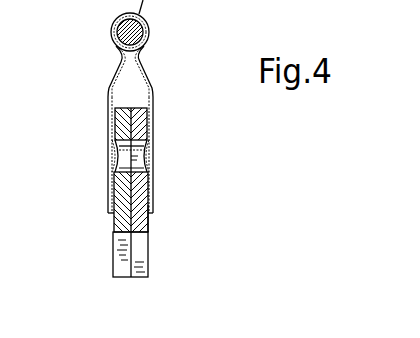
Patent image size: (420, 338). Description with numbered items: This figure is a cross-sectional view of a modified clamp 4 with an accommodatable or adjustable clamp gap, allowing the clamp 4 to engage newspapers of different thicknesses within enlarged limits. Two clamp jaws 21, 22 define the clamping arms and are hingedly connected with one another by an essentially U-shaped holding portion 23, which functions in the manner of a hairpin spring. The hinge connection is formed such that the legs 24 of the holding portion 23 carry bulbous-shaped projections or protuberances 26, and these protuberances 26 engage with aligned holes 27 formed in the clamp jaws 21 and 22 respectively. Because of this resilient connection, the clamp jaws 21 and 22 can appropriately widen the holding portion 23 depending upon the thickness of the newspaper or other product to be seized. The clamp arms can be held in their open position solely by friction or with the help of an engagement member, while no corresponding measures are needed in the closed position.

The stem / shaft 4 is at (125, 277).
The clamp jaw 21 is at (112, 222).
The clamp jaw 22 is at (150, 222).
The holding portion 23 is at (156, 69).
The legs 24 is at (108, 98).
The bulbous-shaped projections 26 is at (112, 156).
The aligned holes 27 is at (113, 171).